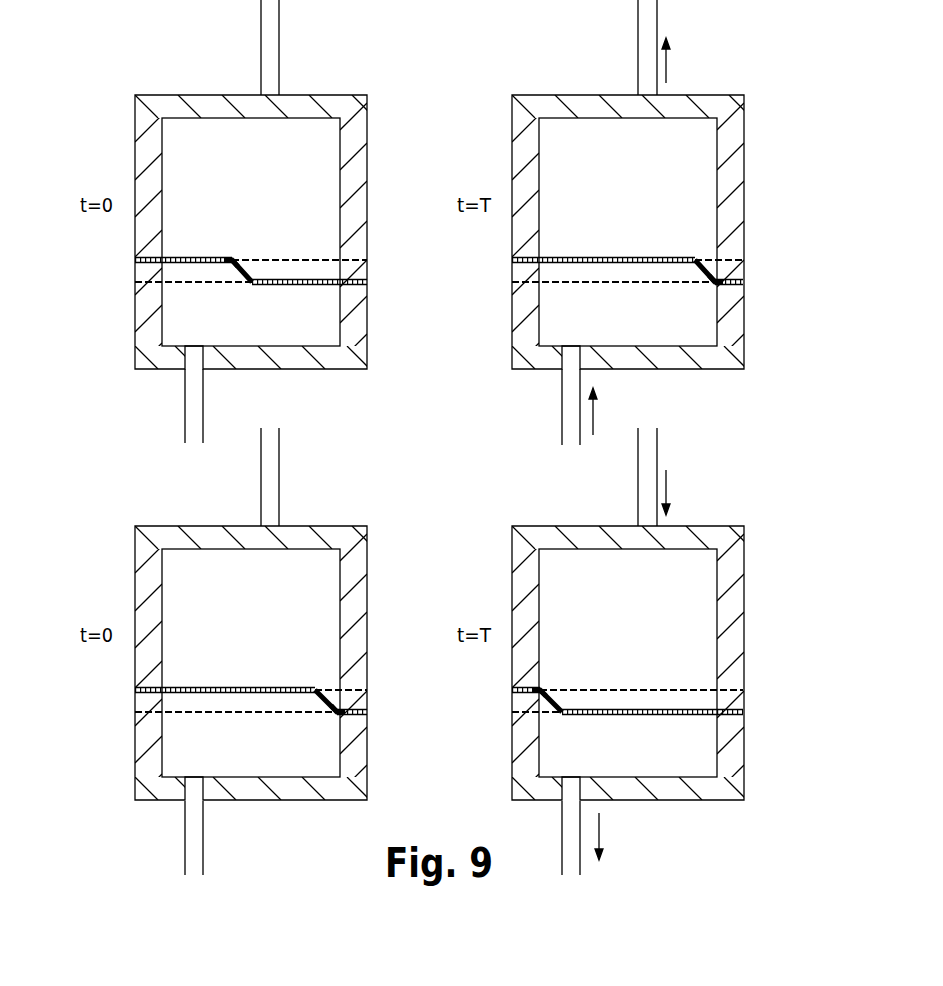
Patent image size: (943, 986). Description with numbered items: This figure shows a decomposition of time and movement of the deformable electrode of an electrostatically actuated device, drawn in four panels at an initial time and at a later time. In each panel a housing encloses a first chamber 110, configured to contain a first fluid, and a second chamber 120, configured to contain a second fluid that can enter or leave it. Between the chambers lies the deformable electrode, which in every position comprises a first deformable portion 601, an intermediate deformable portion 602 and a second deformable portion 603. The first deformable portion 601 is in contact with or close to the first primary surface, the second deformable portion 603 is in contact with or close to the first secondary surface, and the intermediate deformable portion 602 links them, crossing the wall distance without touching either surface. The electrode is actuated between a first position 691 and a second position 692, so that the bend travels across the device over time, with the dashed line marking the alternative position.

The first chamber 110 is at (710, 677).
The second chamber 120 is at (710, 762).
The first deformable portion 601 is at (260, 687).
The intermediate deformable portion 602 is at (560, 700).
The second deformable portion 603 is at (585, 717).
The first position 691 is at (541, 688).
The second position 692 is at (322, 686).